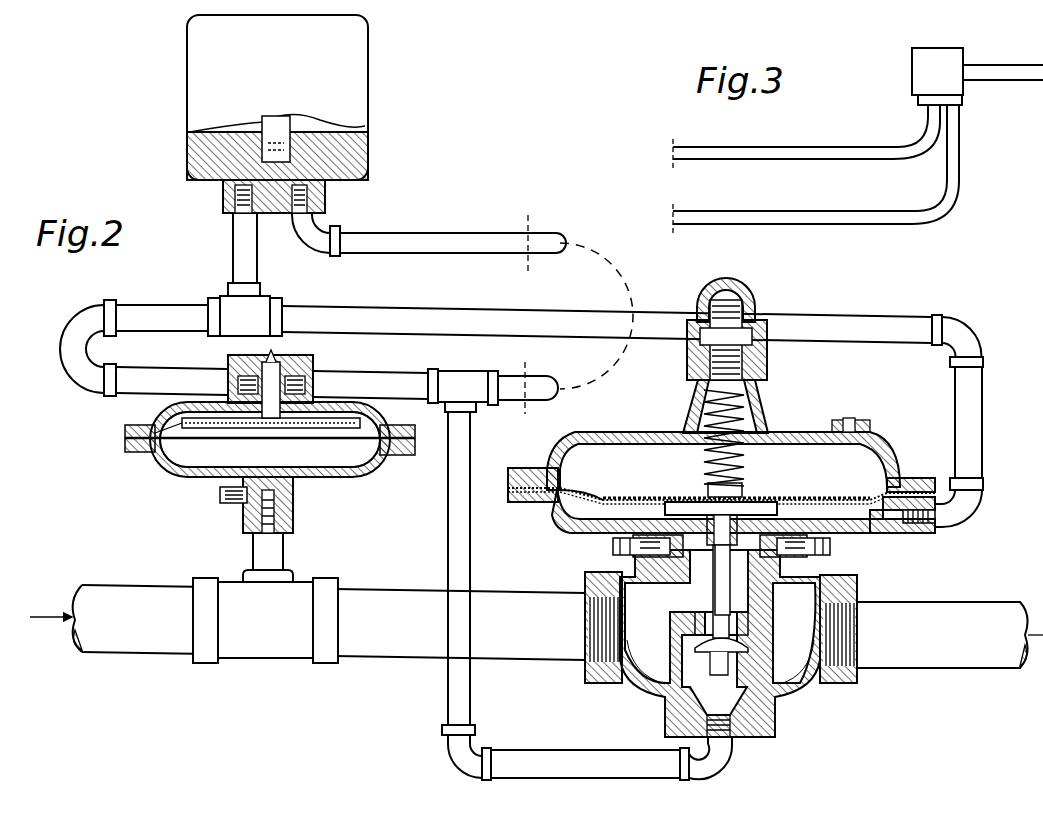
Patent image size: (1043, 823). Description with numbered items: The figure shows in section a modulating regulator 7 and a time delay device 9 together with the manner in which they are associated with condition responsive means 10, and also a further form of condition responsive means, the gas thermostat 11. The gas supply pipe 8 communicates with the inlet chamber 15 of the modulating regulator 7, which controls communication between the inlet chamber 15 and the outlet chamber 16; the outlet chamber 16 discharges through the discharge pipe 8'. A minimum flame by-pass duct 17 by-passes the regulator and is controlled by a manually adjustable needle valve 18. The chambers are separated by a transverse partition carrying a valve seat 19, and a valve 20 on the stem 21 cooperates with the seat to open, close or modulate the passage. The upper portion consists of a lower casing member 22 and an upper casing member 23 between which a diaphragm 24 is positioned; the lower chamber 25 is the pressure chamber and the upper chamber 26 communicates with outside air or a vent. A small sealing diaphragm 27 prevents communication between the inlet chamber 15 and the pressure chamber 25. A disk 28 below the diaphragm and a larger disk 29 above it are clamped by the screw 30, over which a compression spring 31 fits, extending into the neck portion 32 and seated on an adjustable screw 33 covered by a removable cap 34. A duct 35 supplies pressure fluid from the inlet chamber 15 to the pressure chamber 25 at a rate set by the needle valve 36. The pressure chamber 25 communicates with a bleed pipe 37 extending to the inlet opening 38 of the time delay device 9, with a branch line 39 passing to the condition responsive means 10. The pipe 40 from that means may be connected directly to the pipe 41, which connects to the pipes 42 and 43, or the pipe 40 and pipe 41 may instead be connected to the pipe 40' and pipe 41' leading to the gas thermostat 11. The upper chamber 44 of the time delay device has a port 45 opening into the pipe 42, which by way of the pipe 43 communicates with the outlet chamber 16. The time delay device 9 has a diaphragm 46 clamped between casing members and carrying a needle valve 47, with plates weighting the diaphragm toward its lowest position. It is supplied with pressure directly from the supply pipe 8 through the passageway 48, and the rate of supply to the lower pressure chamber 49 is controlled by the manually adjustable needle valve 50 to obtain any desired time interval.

In FIG. 2, the modulating regulator 7 is at (830, 701).
In FIG. 2, the gas supply pipe 8 is at (307, 617).
In FIG. 2, the discharge pipe 8' is at (950, 654).
In FIG. 2, the time delay device 9 is at (150, 455).
In FIG. 2, the condition responsive means 10 is at (372, 92).
In FIG. 3, the condition responsive means or gas thermostat 11 is at (912, 70).
In FIG. 2, the inlet chamber 15 is at (650, 675).
In FIG. 2, the outlet chamber 16 is at (790, 680).
In FIG. 2, the minimum flame by-pass duct 17 is at (800, 585).
In FIG. 2, the manually adjustable needle valve 18 is at (832, 548).
In FIG. 2, the valve seat 19 is at (750, 640).
In FIG. 2, the valve 20 is at (738, 657).
In FIG. 2, the stem 21 is at (712, 599).
In FIG. 2, the lower casing member 22 is at (575, 534).
In FIG. 2, the upper casing member 23 is at (610, 431).
In FIG. 2, the diaphragm or movable wall 24 is at (593, 492).
In FIG. 2, the lower chamber 25 is at (560, 510).
In FIG. 2, the upper chamber 26 is at (878, 462).
In FIG. 2, the small sealing diaphragm 27 is at (735, 556).
In FIG. 2, the disk or flange 28 is at (795, 499).
In FIG. 2, the larger disk 29 is at (642, 497).
In FIG. 2, the screw 30 is at (745, 495).
In FIG. 2, the compression spring 31 is at (746, 460).
In FIG. 2, the neck portion 32 is at (768, 412).
In FIG. 2, the adjustable screw 33 is at (768, 352).
In FIG. 2, the removable cap 34 is at (757, 300).
In FIG. 2, the duct 35 is at (712, 560).
In FIG. 2, the needle valve 36 is at (613, 548).
In FIG. 2, the bleed pipe 37 is at (984, 446).
In FIG. 2, the inlet side or opening 38 is at (292, 360).
In FIG. 2, the branch line 39 is at (258, 278).
In FIG. 2, the pipe 40 is at (462, 291).
In FIG. 2, the pipe 41 is at (541, 388).
In FIG. 2, the pipe 42 is at (385, 375).
In FIG. 2, the pipe 43 is at (447, 525).
In FIG. 2, the upper chamber 44 is at (165, 425).
In FIG. 2, the port 45 is at (282, 405).
In FIG. 2, the diaphragm 46 is at (176, 450).
In FIG. 2, the needle valve 47 is at (266, 416).
In FIG. 2, the duct or passageway 48 is at (294, 500).
In FIG. 2, the lower pressure chamber 49 is at (350, 458).
In FIG. 2, the manually adjustable needle valve 50 is at (225, 500).
In FIG. 3, the pipe 40' is at (803, 145).
In FIG. 3, the pipe 41' is at (813, 176).